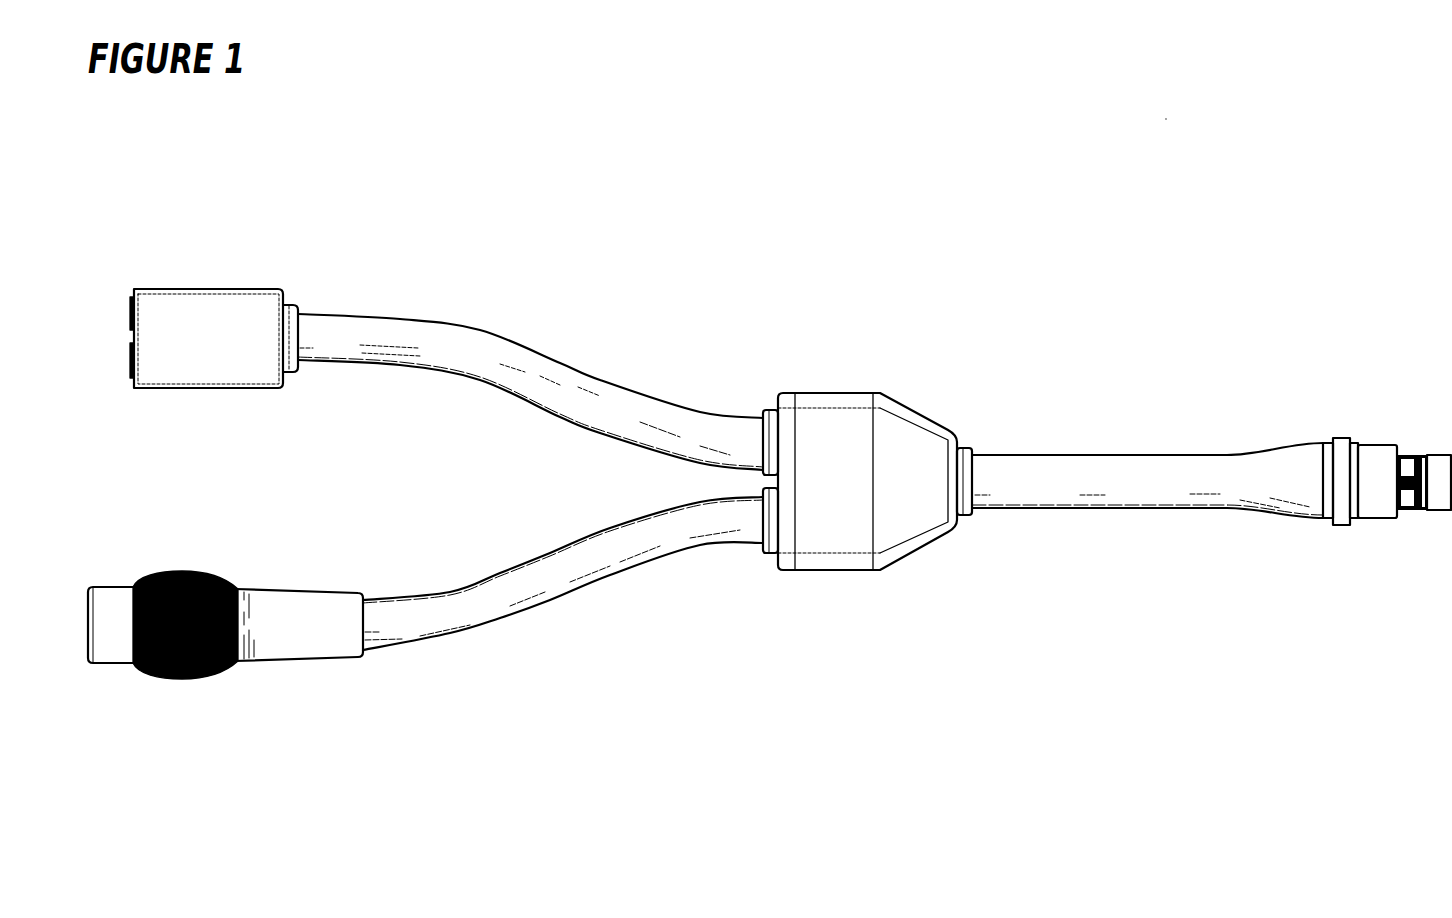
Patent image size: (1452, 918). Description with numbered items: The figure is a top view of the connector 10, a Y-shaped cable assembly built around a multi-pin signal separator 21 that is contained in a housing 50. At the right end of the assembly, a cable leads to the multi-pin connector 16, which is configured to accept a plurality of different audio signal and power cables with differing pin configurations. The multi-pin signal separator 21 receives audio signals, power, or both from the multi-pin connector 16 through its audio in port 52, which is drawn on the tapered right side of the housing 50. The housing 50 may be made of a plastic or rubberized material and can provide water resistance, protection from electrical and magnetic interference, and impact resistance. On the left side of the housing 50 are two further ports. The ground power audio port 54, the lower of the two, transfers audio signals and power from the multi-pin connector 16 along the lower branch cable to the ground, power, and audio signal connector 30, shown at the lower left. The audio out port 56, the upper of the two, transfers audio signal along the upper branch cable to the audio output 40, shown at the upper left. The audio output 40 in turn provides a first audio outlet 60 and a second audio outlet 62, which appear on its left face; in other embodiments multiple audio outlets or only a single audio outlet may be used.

The connector 10 is at (1166, 119).
The multi-pin connector 16 is at (1384, 445).
The multi-pin signal separator 21 is at (895, 582).
The ground, power, and audio signal connector 30 is at (115, 663).
The audio output 40 is at (211, 289).
The housing 50 is at (845, 393).
The audio in port 52 is at (961, 448).
The ground power audio port 54 is at (771, 556).
The audio out port 56 is at (771, 409).
The first audio outlet 60 is at (131, 316).
The second audio outlet 62 is at (131, 360).